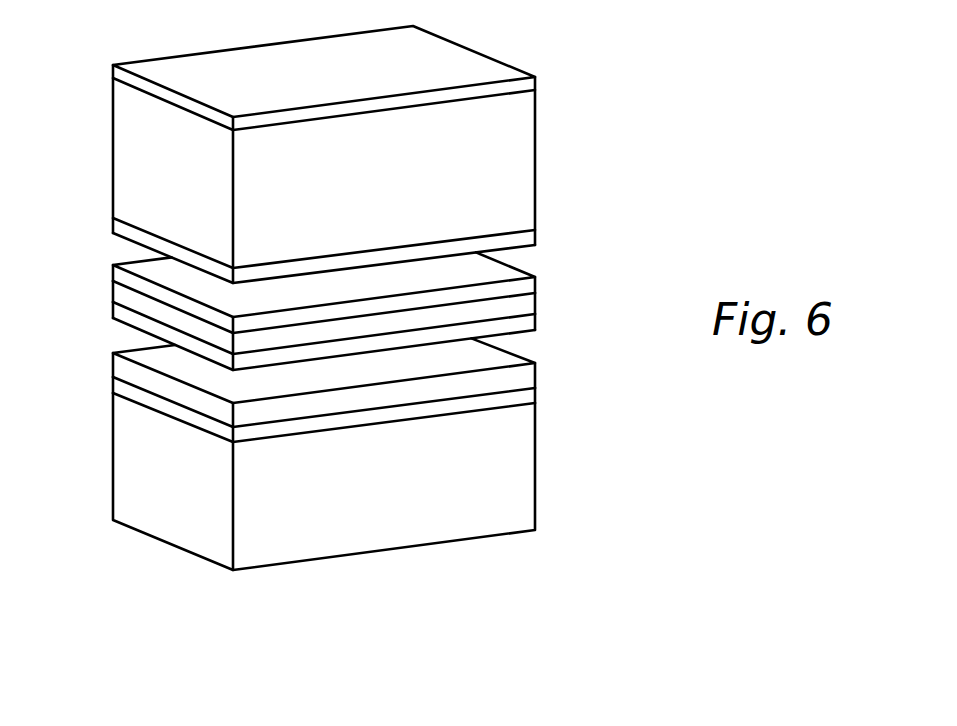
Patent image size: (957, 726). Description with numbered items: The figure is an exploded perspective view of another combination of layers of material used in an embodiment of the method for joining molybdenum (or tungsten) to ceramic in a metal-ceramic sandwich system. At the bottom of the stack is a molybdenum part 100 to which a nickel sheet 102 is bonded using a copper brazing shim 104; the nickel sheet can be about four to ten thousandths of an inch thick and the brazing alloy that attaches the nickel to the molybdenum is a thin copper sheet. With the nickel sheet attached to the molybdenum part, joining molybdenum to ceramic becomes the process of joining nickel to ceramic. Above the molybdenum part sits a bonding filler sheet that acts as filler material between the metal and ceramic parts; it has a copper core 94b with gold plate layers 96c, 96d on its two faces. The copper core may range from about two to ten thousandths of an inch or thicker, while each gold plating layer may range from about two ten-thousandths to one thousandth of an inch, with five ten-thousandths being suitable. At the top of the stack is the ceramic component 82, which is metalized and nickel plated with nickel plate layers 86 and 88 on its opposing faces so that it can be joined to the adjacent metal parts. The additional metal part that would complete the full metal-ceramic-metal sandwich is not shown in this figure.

The ceramic component 82 is at (344, 154).
The nickel plate layer 86 is at (538, 83).
The nickel plate layer 88 is at (538, 237).
The gold plate layer 96c is at (537, 279).
The copper core 94b is at (537, 302).
The gold plate layer 96d is at (537, 323).
The nickel sheet 102 is at (537, 374).
The copper brazing shim 104 is at (537, 393).
The molybdenum part 100 is at (537, 455).